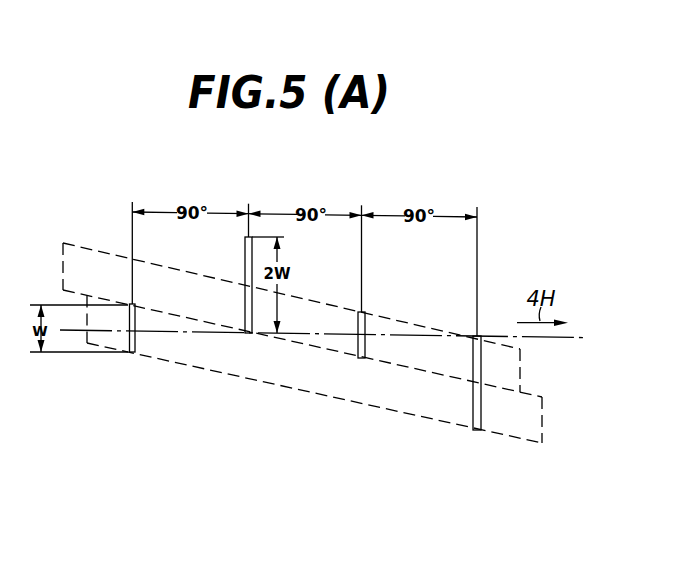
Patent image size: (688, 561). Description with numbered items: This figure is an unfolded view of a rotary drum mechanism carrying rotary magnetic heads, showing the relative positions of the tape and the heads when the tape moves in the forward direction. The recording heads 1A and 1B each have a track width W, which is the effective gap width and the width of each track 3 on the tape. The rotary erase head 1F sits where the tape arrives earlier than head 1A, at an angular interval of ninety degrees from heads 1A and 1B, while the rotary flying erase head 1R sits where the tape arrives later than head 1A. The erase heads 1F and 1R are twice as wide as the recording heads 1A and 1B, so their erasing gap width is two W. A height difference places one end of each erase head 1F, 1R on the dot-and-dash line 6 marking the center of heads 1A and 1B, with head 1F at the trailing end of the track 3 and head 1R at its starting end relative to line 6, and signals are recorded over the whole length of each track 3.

The recording head 1B is at (135, 344).
The rotary flying erase head 1R is at (252, 316).
The recording head 1A is at (365, 350).
The rotary erase head 1F is at (481, 416).
The track 3 is at (522, 370).
The dot-and-dash line 6 is at (318, 335).